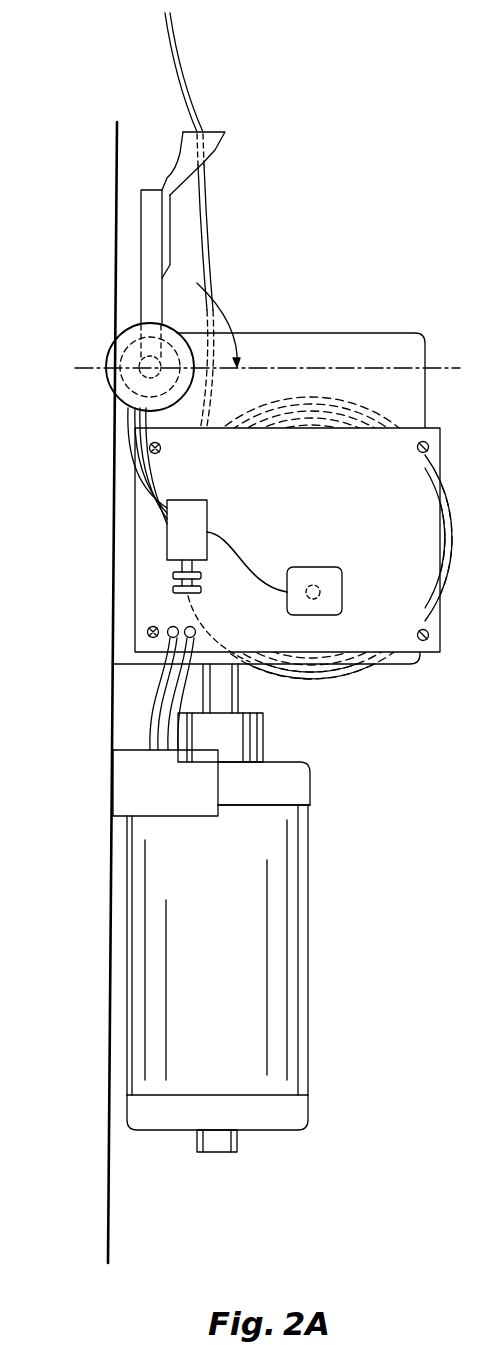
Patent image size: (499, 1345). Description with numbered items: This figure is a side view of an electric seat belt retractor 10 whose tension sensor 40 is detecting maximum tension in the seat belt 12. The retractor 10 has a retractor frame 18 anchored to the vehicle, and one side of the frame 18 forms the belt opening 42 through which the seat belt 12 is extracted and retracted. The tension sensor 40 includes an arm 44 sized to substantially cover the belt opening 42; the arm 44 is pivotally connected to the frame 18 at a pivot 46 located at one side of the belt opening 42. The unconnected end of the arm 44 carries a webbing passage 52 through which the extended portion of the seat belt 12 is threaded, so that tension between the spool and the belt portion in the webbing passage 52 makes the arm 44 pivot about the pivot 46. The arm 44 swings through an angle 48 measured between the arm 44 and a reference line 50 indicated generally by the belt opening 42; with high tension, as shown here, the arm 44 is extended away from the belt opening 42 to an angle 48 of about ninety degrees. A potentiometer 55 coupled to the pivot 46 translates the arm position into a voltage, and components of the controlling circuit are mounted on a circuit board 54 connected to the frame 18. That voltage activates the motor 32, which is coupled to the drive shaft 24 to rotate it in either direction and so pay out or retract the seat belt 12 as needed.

The retractor 10 is at (370, 185).
The seat belt 12 is at (182, 52).
The retractor frame 18 is at (357, 355).
The drive shaft 24 is at (227, 693).
The motor 32 is at (229, 957).
The tension sensor 40 is at (100, 280).
The belt opening 42 is at (330, 318).
The arm 44 is at (147, 252).
The pivot 46 is at (138, 357).
The angle 48 is at (163, 283).
The reference line 50 is at (437, 368).
The webbing passage 52 is at (180, 152).
The circuit board 54 is at (440, 600).
The potentiometer 55 is at (98, 383).